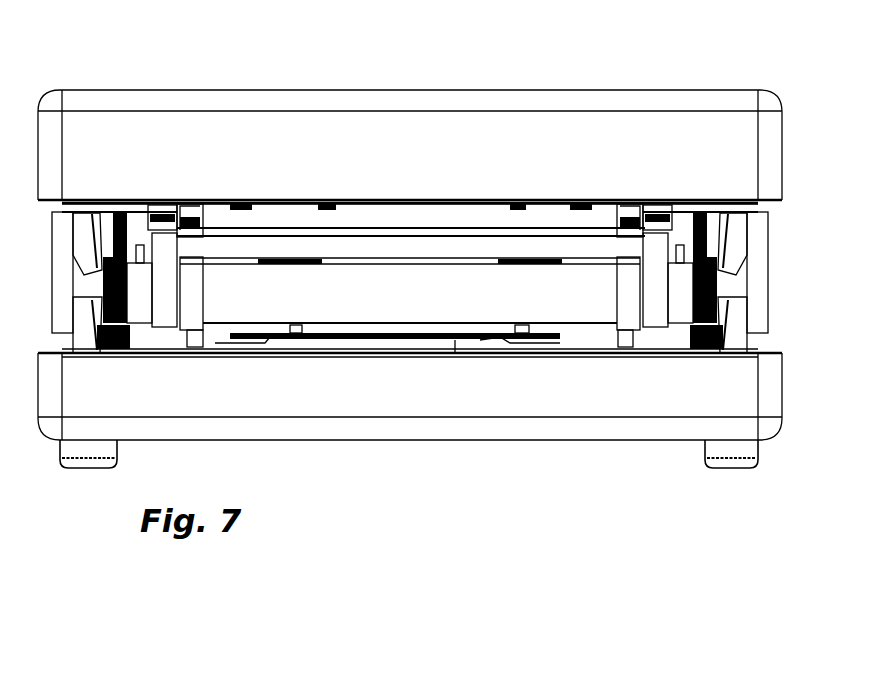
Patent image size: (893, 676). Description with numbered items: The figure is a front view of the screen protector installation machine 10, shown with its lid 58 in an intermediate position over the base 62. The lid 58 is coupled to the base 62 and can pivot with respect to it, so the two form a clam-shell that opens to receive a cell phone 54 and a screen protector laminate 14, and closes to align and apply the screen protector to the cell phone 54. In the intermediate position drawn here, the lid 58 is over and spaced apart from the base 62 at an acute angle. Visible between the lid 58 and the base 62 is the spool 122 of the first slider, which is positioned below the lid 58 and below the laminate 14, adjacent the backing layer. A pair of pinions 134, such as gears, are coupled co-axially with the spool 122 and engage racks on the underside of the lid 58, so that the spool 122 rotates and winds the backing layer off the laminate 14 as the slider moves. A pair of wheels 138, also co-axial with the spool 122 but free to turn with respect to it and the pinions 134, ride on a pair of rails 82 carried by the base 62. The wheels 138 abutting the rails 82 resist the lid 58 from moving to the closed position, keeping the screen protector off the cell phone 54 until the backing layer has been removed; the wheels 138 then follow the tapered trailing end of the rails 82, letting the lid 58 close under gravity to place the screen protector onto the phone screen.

The screen protector installation machine 10 is at (293, 473).
The screen protector laminate 14 is at (410, 230).
The cell phone 54 is at (455, 343).
The lid 58 is at (525, 130).
The base 62 is at (550, 403).
The rails 82 is at (627, 343).
The spool 122 is at (283, 287).
The pinions 134 is at (112, 213).
The wheels 138 is at (627, 267).